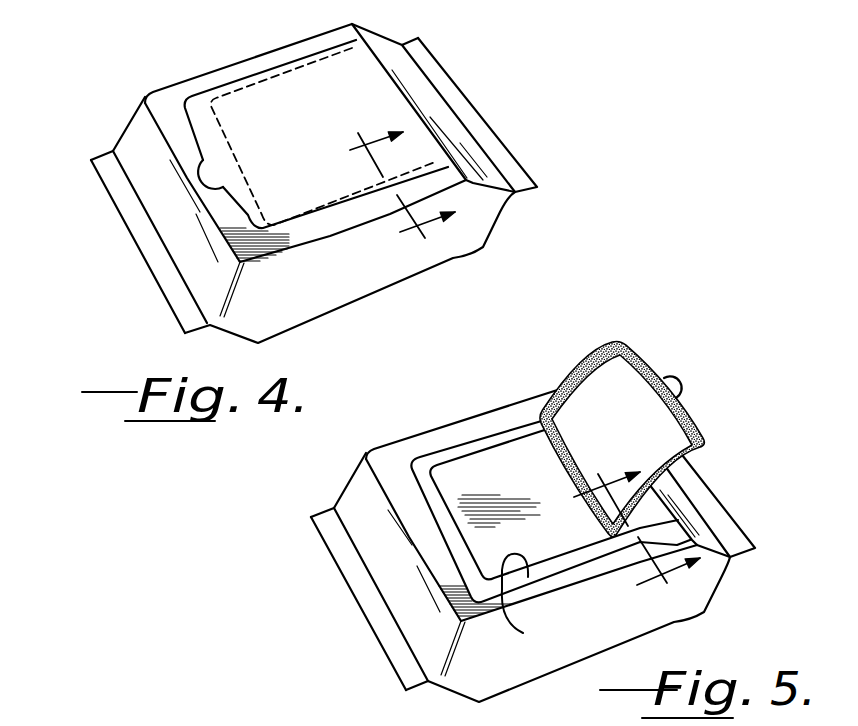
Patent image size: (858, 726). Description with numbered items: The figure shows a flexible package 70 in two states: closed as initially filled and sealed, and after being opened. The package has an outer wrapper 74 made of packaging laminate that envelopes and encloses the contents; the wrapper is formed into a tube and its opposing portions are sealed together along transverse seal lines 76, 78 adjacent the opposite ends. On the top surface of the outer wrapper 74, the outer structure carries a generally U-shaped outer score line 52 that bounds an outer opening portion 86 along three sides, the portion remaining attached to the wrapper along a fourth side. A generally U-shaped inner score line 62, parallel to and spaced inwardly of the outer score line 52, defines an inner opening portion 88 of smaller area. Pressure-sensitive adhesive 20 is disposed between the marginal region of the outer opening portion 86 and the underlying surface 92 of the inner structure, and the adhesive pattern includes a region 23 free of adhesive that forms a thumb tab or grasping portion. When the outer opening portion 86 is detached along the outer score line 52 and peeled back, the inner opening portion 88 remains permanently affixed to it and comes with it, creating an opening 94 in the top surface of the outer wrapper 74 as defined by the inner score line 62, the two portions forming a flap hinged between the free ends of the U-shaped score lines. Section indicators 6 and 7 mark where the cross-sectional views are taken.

In FIG. 4, the flexible package 70 is at (172, 68).
In FIG. 5, the flexible package 70 is at (318, 557).
In FIG. 4, the outer opening portion 86 is at (267, 112).
In FIG. 4, the inner score line 62 is at (293, 72).
In FIG. 4, the region free of adhesive 23 is at (208, 168).
In FIG. 5, the region free of adhesive 23 is at (676, 380).
In FIG. 4, the outer wrapper 74 is at (420, 93).
In FIG. 5, the outer wrapper 74 is at (677, 500).
In FIG. 4, the transverse seal line 78 is at (502, 155).
In FIG. 5, the transverse seal line 78 is at (733, 533).
In FIG. 4, the transverse seal line 76 is at (153, 287).
In FIG. 5, the transverse seal line 76 is at (367, 608).
In FIG. 4, the outer score line 52 is at (288, 222).
In FIG. 5, the inner opening portion 88 is at (578, 404).
In FIG. 5, the pressure-sensitive adhesive 20 is at (618, 340).
In FIG. 5, the underlying surface of the inner structure 92 is at (440, 450).
In FIG. 5, the opening 94 is at (528, 605).
In FIG. 4, the section line 6 is at (386, 192).
In FIG. 5, the section line 7 is at (624, 545).